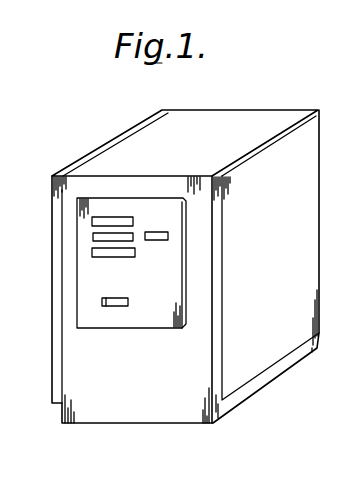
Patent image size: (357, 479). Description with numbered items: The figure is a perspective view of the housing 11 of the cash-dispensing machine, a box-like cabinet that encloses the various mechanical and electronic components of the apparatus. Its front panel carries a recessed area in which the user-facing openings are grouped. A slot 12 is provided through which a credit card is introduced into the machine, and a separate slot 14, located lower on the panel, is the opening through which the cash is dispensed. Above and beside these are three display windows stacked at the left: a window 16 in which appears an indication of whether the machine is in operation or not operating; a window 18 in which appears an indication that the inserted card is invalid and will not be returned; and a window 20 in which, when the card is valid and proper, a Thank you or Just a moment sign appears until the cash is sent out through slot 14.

The housing 11 is at (235, 127).
The slot 12 is at (153, 234).
The slot 14 is at (115, 303).
The window 16 is at (106, 218).
The window 18 is at (100, 237).
The window 20 is at (95, 255).